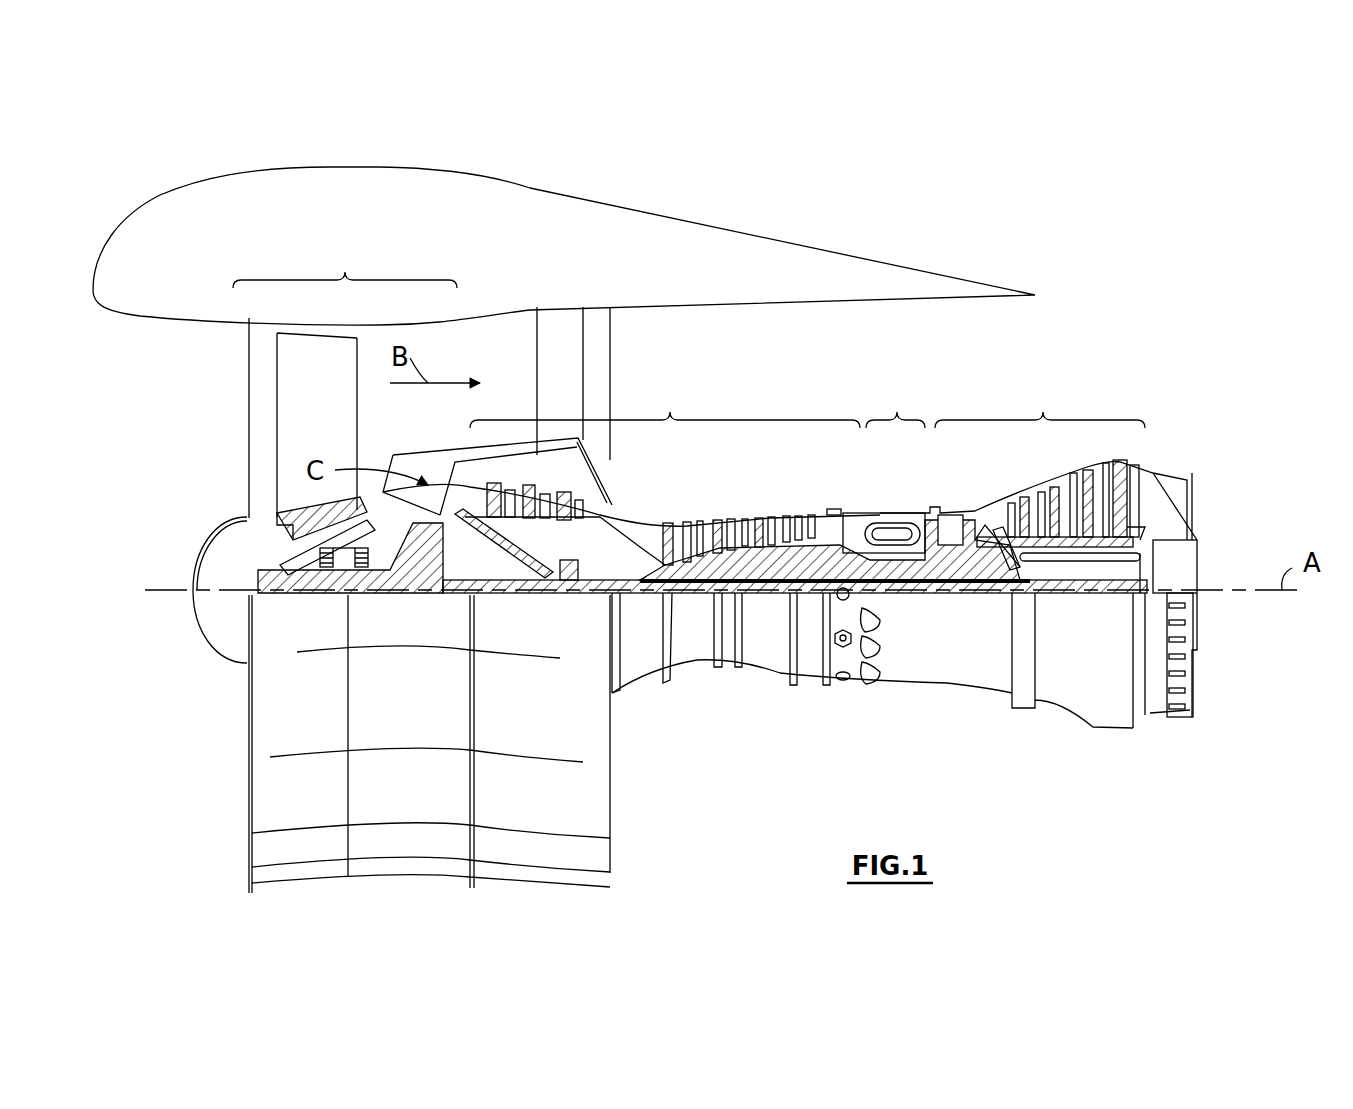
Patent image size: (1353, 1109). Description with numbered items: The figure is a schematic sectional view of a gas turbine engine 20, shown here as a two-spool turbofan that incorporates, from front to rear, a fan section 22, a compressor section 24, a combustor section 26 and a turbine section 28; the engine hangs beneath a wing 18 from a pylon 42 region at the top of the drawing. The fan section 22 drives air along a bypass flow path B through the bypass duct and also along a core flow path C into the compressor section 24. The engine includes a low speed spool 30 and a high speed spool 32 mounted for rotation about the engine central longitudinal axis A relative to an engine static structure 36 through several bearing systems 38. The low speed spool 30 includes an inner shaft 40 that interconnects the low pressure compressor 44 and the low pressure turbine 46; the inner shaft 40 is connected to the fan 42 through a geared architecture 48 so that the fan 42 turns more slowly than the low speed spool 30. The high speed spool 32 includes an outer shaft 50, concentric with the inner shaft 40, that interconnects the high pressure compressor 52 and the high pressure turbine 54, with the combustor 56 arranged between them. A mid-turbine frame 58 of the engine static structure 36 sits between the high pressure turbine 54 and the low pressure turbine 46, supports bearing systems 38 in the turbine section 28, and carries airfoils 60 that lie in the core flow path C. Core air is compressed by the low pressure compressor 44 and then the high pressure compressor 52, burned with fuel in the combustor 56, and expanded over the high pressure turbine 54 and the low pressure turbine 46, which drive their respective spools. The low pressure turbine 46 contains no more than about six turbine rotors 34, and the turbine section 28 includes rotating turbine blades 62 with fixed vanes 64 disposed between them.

The wing 18 is at (565, 227).
The gas turbine engine 20 is at (1068, 226).
The fan section 22 is at (345, 262).
The compressor section 24 is at (665, 404).
The combustor section 26 is at (895, 404).
The turbine section 28 is at (1040, 404).
The low speed spool 30 is at (768, 600).
The high speed spool 32 is at (807, 557).
The turbine rotors 34 is at (1135, 555).
The engine static structure 36 is at (808, 688).
The bearing systems 38 is at (325, 573).
The inner shaft 40 is at (628, 597).
The fan 42 is at (330, 438).
The low pressure compressor 44 is at (547, 493).
The low pressure turbine 46 is at (1077, 475).
The geared architecture 48 is at (437, 575).
The outer shaft 50 is at (897, 575).
The high pressure compressor 52 is at (743, 563).
The high pressure turbine 54 is at (950, 513).
The combustor 56 is at (883, 533).
The mid-turbine frame 58 is at (993, 500).
The airfoils 60 is at (1003, 527).
The turbine blades 62 is at (1113, 527).
The vanes 64 is at (1137, 490).